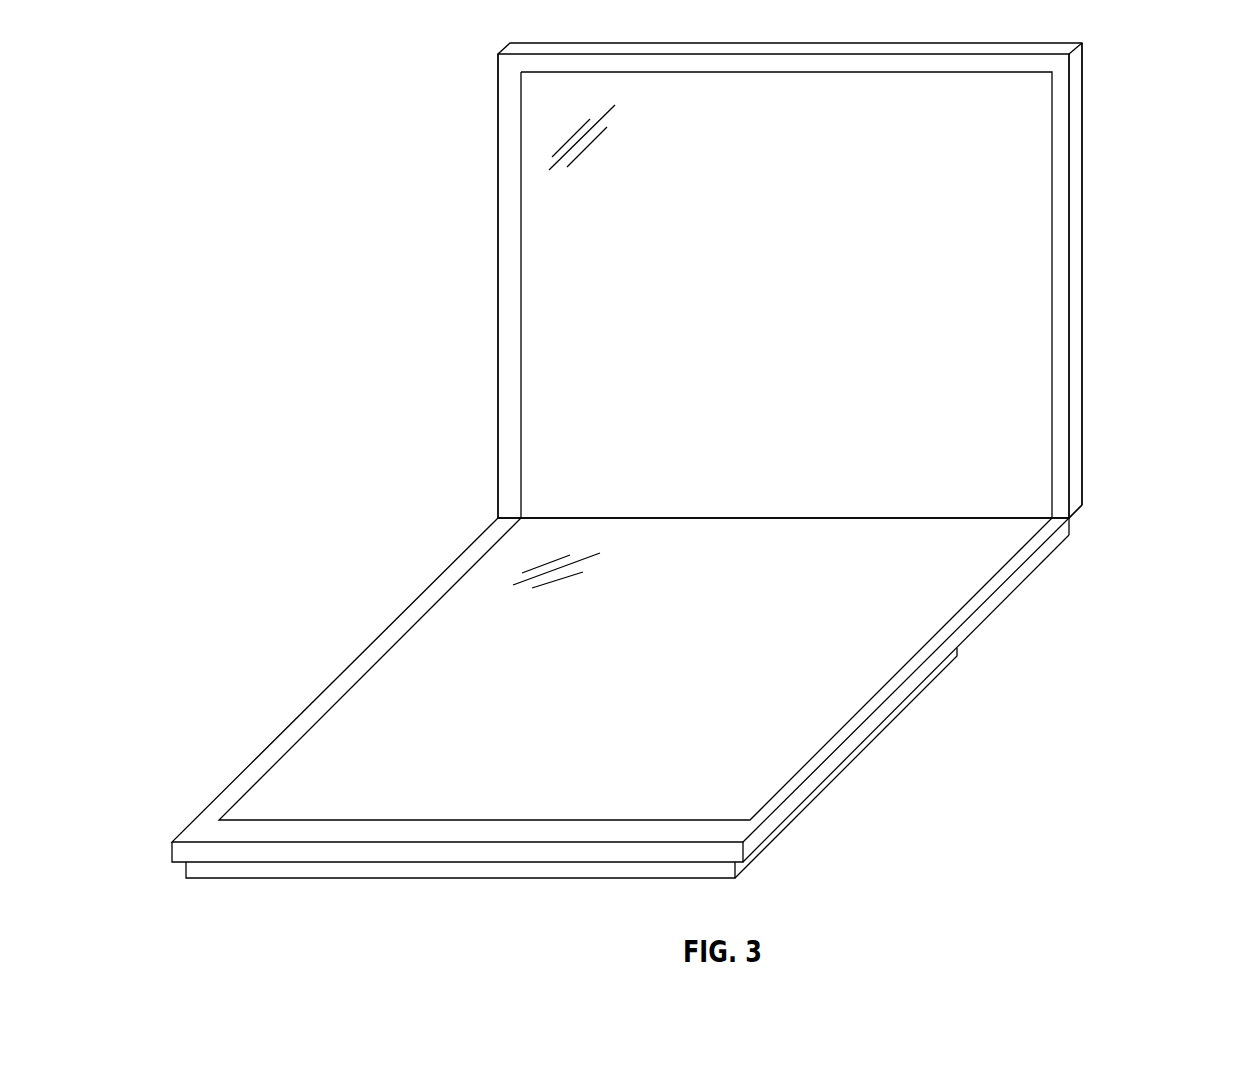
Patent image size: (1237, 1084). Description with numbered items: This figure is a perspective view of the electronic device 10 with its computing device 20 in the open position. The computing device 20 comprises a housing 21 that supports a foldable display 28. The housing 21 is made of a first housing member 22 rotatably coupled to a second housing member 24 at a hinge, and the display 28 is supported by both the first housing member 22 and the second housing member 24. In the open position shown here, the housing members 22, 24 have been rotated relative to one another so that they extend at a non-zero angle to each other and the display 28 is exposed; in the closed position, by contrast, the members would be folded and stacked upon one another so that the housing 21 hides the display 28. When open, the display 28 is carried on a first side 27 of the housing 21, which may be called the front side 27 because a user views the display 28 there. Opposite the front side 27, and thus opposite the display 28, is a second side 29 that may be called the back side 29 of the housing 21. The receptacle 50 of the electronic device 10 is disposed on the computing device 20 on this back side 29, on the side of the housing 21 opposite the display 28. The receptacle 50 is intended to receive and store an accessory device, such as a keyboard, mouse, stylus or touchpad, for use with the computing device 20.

The electronic device 10 is at (1160, 120).
The computing device 20 is at (477, 122).
The housing 21 is at (496, 210).
The first housing member 22 is at (1015, 582).
The second housing member 24 is at (1075, 257).
The first side 27 is at (467, 493).
The foldable display 28 is at (540, 293).
The second side 29 is at (1103, 372).
The receptacle 50 is at (793, 818).